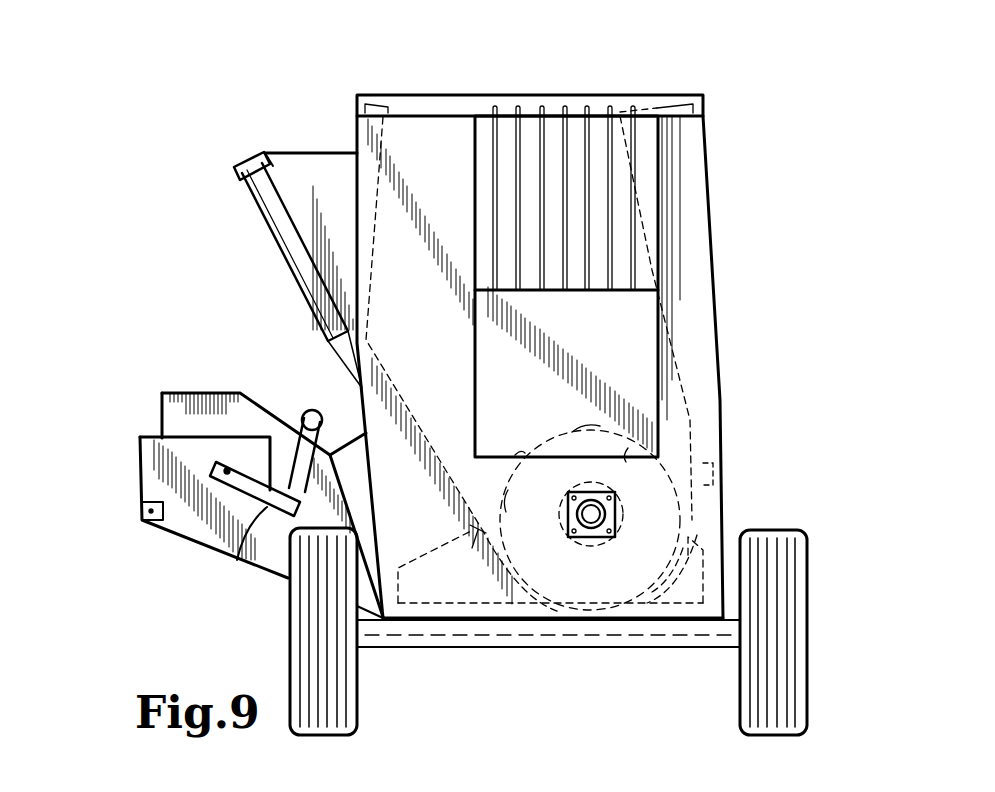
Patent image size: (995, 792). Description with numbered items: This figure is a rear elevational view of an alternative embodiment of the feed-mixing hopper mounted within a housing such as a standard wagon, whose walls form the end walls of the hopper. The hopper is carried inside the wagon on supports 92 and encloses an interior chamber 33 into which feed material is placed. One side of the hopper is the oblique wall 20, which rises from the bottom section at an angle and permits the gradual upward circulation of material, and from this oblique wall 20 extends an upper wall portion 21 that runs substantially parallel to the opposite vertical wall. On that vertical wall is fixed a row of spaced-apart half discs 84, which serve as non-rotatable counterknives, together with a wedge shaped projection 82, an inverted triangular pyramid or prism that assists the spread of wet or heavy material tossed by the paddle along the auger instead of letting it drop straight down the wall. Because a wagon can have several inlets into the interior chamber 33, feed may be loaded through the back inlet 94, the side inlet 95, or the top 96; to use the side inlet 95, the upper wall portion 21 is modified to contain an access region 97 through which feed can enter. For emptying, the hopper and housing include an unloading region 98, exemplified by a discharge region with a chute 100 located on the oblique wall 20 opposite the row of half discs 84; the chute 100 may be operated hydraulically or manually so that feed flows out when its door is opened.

The oblique wall 20 is at (372, 358).
The upper wall portion 21 is at (368, 228).
The interior chamber 33 is at (614, 88).
The wedge shaped projection 82 is at (627, 147).
The half discs 84 is at (690, 500).
The supports 92 is at (706, 462).
The back inlet 94 is at (628, 332).
The side inlet 95 is at (300, 148).
The top 96 is at (535, 88).
The access region 97 is at (357, 256).
The unloading region 98 is at (178, 538).
The chute 100 is at (130, 467).